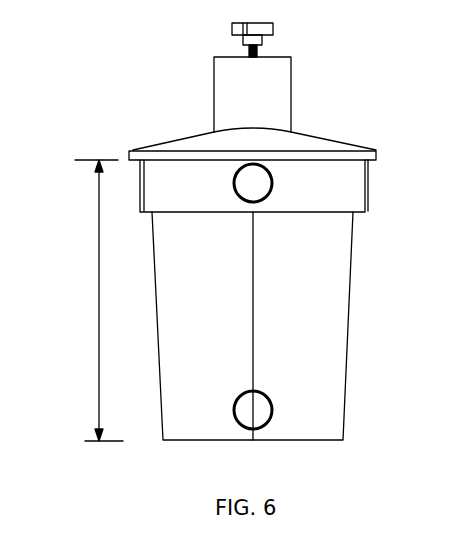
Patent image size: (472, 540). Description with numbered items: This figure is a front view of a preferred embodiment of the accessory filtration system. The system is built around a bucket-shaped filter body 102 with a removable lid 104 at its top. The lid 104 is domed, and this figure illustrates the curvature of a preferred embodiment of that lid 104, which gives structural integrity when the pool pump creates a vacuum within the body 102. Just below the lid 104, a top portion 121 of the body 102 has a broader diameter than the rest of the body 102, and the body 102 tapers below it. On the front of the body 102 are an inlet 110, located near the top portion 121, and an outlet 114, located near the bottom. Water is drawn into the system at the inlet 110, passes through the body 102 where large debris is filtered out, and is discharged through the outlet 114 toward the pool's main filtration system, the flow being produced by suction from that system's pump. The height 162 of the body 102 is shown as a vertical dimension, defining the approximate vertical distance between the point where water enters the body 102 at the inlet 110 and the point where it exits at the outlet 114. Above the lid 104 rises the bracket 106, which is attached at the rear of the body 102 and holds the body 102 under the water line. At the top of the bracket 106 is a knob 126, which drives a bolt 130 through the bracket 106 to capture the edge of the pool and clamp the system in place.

The knob 126 is at (273, 25).
The bolt 130 is at (247, 53).
The bracket 106 is at (214, 96).
The lid 104 is at (316, 138).
The top portion 121 is at (366, 184).
The filter body 102 is at (349, 325).
The inlet 110 is at (272, 190).
The outlet 114 is at (272, 412).
The height 162 is at (99, 305).